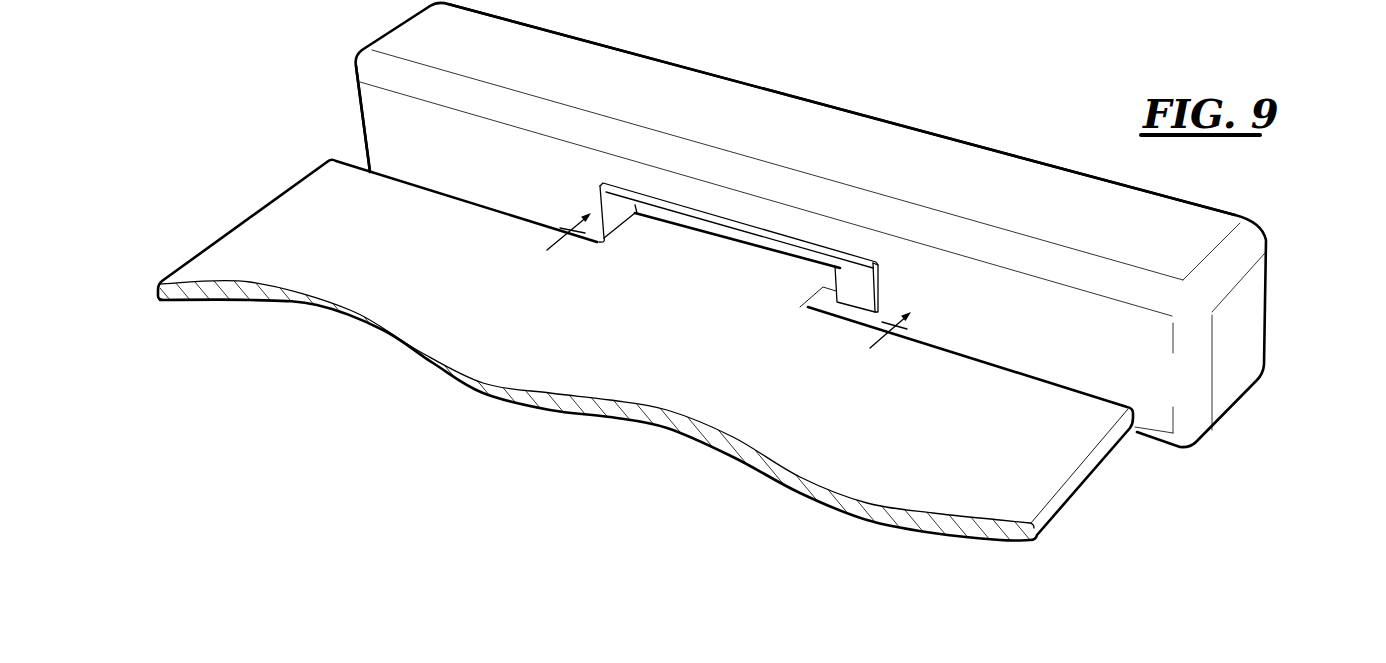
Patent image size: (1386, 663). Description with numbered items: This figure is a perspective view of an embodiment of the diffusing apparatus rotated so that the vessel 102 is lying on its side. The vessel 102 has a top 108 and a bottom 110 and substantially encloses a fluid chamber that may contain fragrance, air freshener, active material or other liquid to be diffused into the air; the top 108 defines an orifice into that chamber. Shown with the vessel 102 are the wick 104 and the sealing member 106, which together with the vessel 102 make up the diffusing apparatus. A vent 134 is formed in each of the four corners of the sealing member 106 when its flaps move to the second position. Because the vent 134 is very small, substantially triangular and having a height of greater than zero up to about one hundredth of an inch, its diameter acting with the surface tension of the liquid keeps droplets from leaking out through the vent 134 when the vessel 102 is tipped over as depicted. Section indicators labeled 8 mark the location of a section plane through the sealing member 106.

The vessel 102 is at (1270, 320).
The wick 104 is at (1043, 447).
The sealing member 106 is at (858, 279).
The top 108 is at (385, 108).
The bottom 110 is at (663, 60).
The vent 134 is at (838, 268).
The section line 8- 8 is at (737, 274).